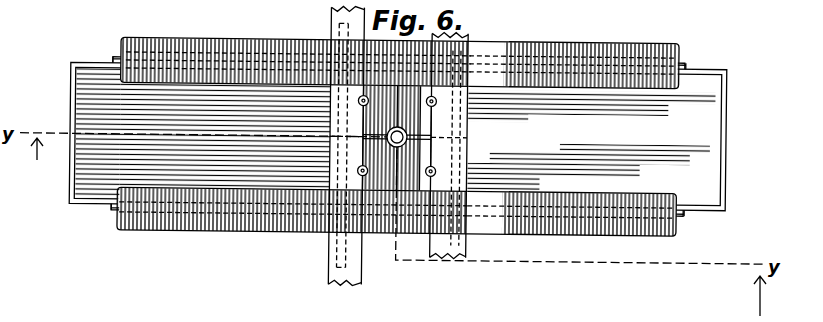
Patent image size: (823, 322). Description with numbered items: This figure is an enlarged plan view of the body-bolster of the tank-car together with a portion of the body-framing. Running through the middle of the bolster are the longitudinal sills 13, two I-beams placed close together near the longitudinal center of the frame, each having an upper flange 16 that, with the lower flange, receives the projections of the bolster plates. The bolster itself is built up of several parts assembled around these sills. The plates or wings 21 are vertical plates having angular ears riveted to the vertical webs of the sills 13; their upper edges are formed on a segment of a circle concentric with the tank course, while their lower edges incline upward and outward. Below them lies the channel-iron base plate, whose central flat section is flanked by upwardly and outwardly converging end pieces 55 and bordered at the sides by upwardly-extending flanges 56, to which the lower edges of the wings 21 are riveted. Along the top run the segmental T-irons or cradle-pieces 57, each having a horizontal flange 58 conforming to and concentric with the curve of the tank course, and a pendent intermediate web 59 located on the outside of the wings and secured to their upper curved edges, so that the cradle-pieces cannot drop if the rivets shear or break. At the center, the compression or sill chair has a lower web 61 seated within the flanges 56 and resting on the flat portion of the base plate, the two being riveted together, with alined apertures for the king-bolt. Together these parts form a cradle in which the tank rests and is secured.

The longitudinal sills 13 is at (402, 173).
The upper flange 16 is at (337, 262).
The plates or wings 21 is at (74, 62).
The end pieces 55 is at (74, 174).
The flanges 56 is at (72, 86).
The segmental T-irons or cradle-pieces 57 is at (171, 40).
The horizontal flange 58 is at (237, 232).
The pendent intermediate web 59 is at (116, 54).
The lower web 61 is at (424, 186).